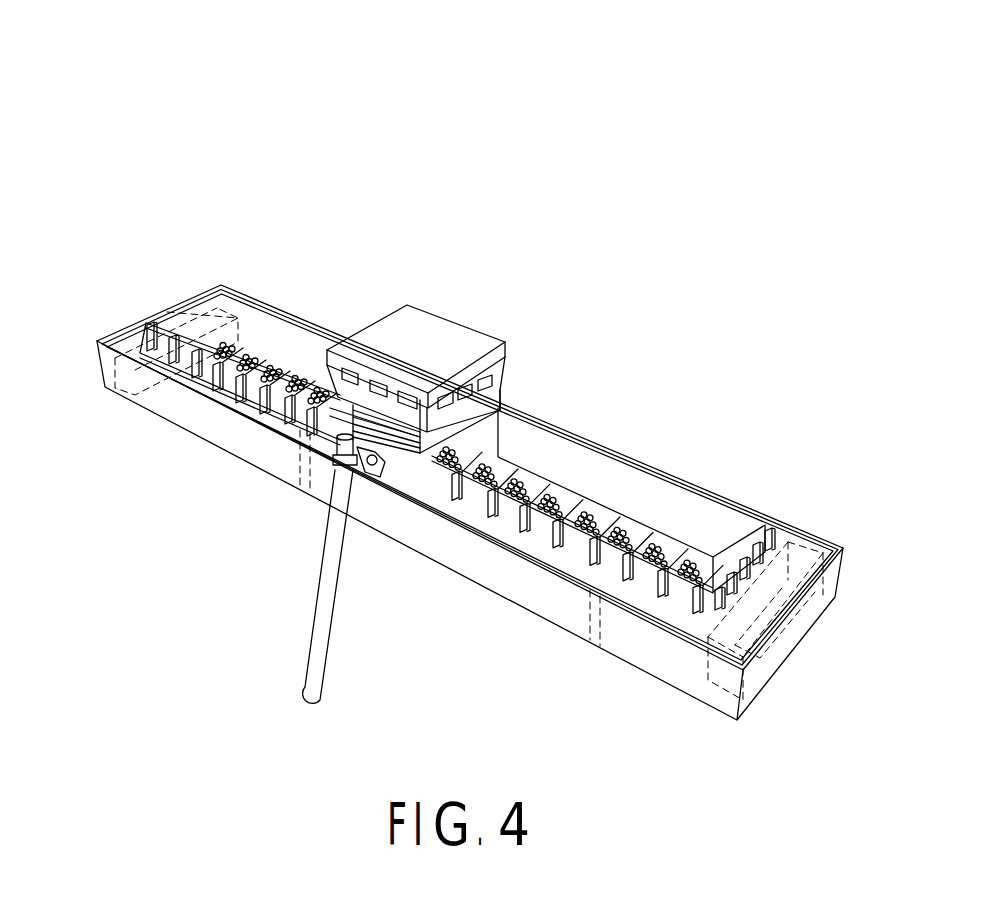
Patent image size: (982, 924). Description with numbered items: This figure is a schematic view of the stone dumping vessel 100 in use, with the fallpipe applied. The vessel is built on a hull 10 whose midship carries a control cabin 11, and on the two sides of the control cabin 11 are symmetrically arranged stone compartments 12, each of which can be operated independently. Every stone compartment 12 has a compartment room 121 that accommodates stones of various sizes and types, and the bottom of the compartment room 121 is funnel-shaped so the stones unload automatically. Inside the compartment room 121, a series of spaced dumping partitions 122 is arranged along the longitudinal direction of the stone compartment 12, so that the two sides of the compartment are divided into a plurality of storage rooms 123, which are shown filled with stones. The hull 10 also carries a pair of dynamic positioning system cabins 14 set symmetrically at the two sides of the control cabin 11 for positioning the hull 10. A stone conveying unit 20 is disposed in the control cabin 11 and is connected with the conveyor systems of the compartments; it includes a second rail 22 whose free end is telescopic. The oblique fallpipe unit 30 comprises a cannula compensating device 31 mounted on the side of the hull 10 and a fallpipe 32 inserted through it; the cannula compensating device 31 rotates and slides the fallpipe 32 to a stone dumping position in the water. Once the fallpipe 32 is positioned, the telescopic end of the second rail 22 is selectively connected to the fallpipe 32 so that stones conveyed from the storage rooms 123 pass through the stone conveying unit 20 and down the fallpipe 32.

The stone dumping vessel 100 is at (122, 105).
The hull 10 is at (120, 313).
The control cabin 11 is at (437, 345).
The stone compartment 12 is at (276, 327).
The compartment room 121 is at (638, 503).
The dumping partition 122 is at (512, 473).
The storage room 123 is at (530, 497).
The dynamic positioning system cabin 14 is at (813, 523).
The stone conveying unit 20 is at (402, 451).
The second rail 22 is at (341, 433).
The oblique fallpipe unit 30 is at (317, 477).
The cannula compensating device 31 is at (330, 482).
The fallpipe 32 is at (317, 660).